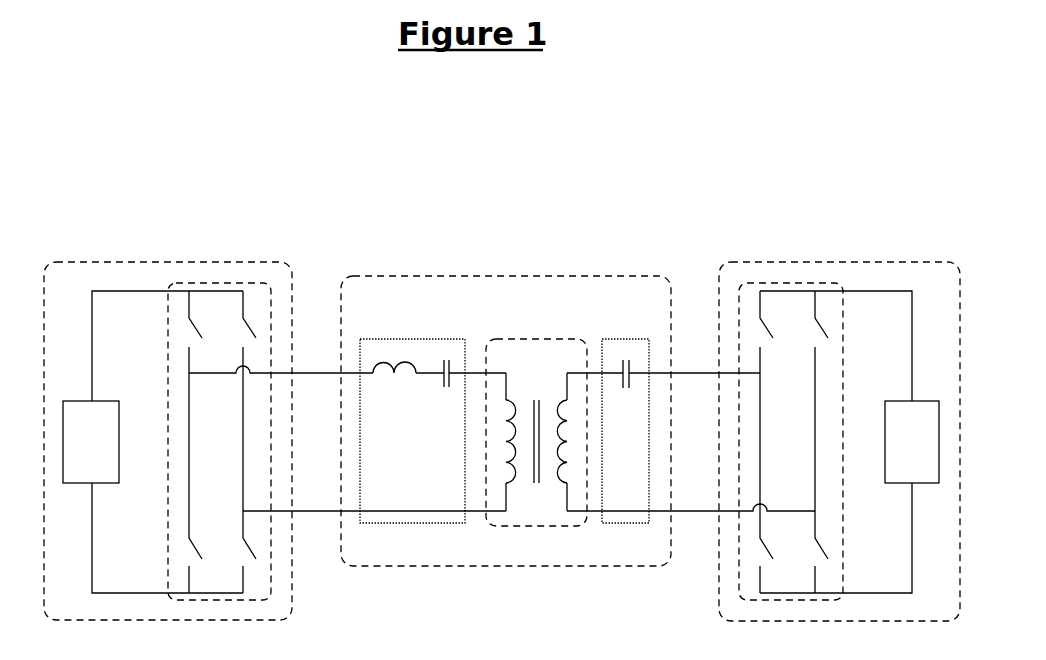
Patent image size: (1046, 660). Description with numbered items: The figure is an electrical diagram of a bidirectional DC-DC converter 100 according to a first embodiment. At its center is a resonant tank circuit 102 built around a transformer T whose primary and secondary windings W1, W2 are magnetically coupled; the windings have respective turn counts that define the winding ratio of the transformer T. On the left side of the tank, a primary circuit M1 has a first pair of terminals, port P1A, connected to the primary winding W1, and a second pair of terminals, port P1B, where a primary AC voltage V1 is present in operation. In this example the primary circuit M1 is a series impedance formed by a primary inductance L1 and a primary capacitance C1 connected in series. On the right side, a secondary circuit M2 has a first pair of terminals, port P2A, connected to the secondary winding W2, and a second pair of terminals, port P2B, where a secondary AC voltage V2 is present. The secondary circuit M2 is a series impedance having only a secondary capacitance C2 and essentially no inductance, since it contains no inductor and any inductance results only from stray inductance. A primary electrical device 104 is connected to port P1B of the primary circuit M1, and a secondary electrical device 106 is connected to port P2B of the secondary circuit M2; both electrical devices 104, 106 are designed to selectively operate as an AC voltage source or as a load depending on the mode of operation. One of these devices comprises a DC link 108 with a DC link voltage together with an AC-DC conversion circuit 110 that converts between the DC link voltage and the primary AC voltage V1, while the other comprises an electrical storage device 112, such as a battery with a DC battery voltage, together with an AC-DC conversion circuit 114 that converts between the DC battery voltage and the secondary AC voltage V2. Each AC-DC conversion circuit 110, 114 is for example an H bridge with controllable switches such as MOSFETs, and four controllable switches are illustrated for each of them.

The bidirectional DC-DC converter 100 is at (582, 215).
The resonant tank circuit 102 is at (552, 276).
The primary electrical device 104 is at (186, 262).
The secondary electrical device 106 is at (872, 262).
The DC link 108 is at (91, 442).
The AC-DC conversion circuit 110 is at (168, 350).
The electrical storage device 112 is at (912, 442).
The AC-DC conversion circuit 114 is at (843, 360).
The primary circuit M1 is at (400, 339).
The secondary circuit M2 is at (605, 339).
The primary inductance L1 is at (390, 375).
The primary capacitance C1 is at (447, 388).
The secondary capacitance C2 is at (625, 390).
The transformer T is at (548, 339).
The primary winding W1 is at (509, 485).
The secondary winding W2 is at (560, 400).
The primary AC voltage V1 is at (331, 395).
The secondary AC voltage V2 is at (685, 503).
The port P1A is at (472, 527).
The port P1B is at (355, 527).
The port P2A is at (600, 536).
The port P2B is at (660, 536).